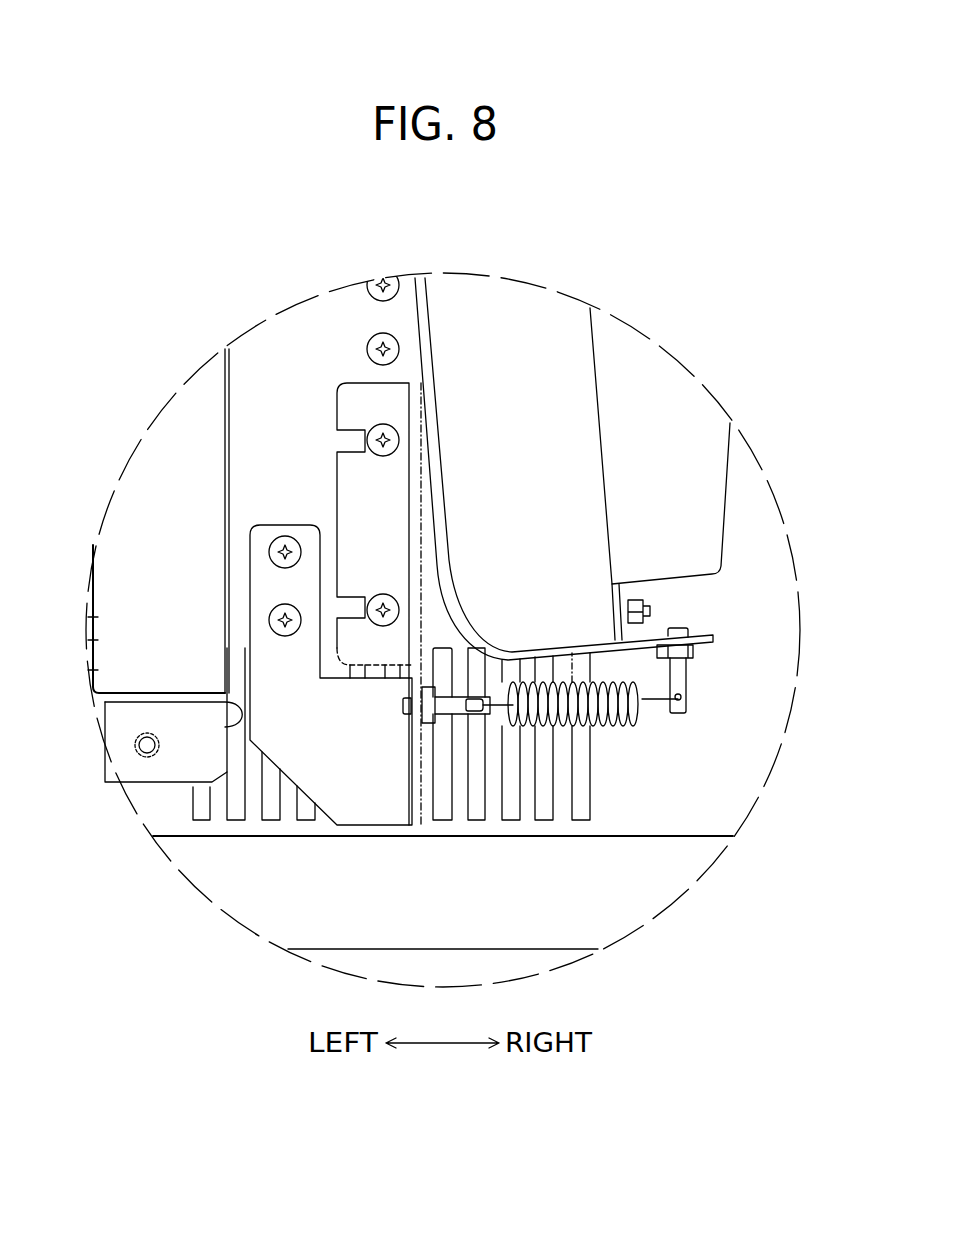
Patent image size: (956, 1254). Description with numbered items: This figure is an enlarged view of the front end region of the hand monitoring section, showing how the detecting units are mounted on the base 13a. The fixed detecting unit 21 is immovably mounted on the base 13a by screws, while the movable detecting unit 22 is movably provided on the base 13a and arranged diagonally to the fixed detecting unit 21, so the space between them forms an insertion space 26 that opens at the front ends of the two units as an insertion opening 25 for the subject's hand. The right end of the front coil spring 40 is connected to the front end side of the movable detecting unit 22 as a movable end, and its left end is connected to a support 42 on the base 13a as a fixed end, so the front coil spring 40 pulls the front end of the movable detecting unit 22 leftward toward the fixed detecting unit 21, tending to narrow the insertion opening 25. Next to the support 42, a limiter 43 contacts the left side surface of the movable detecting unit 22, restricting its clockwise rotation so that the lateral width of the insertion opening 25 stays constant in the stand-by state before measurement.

The base 13a is at (720, 797).
The fixed detecting unit 21 is at (182, 430).
The movable detecting unit 22 is at (542, 334).
The insertion opening 25 is at (225, 727).
The insertion space 26 is at (297, 388).
The front coil spring 40 is at (620, 726).
The support 42 is at (367, 792).
The limiter 43 is at (436, 617).